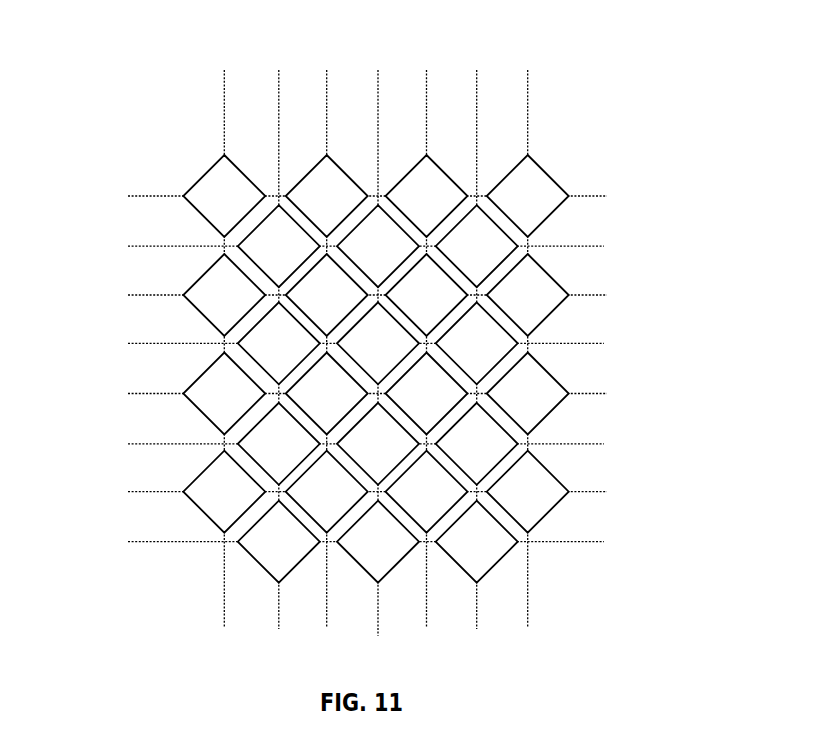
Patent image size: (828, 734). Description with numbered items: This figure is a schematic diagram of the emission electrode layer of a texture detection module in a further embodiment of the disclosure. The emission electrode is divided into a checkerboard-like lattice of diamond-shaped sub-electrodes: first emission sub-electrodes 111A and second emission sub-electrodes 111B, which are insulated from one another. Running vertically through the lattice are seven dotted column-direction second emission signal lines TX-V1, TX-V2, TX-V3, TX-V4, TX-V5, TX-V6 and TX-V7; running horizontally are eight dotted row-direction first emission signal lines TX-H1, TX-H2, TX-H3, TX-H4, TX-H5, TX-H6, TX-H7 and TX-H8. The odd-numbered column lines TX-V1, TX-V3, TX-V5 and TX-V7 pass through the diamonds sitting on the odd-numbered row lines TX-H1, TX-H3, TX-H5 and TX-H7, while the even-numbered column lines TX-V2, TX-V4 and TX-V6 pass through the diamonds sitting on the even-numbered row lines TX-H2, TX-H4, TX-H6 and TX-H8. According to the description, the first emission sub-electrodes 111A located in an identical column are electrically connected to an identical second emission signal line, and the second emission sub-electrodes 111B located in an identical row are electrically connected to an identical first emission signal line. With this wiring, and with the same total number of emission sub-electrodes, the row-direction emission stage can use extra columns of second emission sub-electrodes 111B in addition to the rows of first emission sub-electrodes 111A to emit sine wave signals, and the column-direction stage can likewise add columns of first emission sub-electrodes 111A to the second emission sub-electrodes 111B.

The first emission sub-electrode 111A is at (482, 245).
The second emission sub-electrode 111B is at (528, 195).
The second emission signal line TX-V1 is at (218, 332).
The second emission signal line TX-V2 is at (275, 365).
The second emission signal line TX-V3 is at (326, 332).
The second emission signal line TX-V4 is at (374, 365).
The second emission signal line TX-V5 is at (425, 332).
The second emission signal line TX-V6 is at (473, 365).
The second emission signal line TX-V7 is at (526, 332).
The first emission signal line TX-H1 is at (326, 196).
The first emission signal line TX-H2 is at (325, 246).
The first emission signal line TX-H3 is at (326, 295).
The first emission signal line TX-H4 is at (325, 344).
The first emission signal line TX-H5 is at (328, 395).
The first emission signal line TX-H6 is at (326, 444).
The first emission signal line TX-H7 is at (329, 491).
The first emission signal line TX-H8 is at (328, 538).